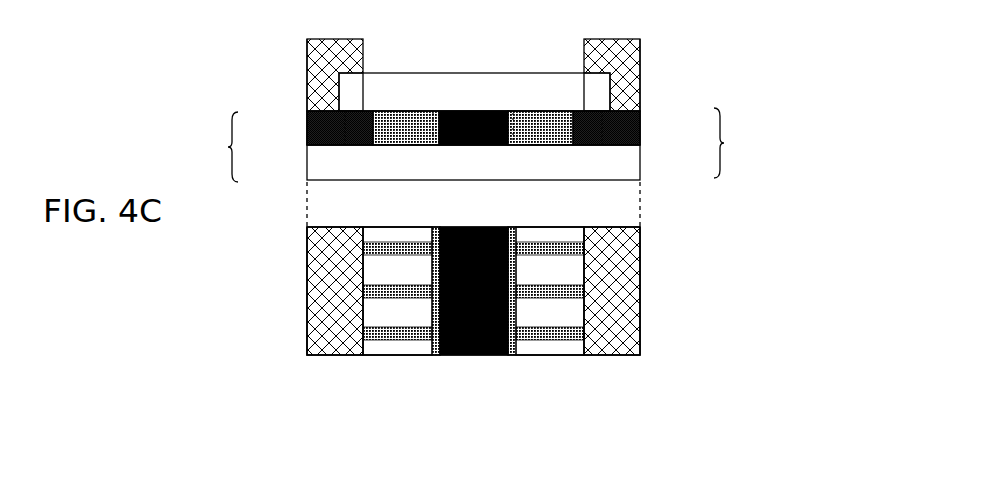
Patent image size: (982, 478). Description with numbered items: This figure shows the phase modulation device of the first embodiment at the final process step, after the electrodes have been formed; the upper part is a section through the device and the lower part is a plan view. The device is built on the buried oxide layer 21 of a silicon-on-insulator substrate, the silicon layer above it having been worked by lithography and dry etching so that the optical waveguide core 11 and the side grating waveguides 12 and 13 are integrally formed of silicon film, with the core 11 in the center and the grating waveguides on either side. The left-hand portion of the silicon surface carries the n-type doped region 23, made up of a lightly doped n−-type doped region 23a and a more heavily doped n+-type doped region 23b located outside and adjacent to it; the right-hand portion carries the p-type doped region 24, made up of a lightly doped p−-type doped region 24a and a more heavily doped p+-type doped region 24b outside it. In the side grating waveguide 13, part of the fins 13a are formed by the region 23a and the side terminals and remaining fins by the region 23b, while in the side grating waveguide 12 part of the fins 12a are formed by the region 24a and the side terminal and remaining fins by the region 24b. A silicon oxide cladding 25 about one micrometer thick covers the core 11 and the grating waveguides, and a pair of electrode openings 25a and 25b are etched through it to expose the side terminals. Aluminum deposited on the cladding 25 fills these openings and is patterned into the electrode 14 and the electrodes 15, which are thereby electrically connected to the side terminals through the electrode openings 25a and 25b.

The optical waveguide core 11 is at (470, 127).
The side grating waveguide 12 is at (563, 362).
The fins 12a is at (550, 255).
The side grating waveguide 13 is at (388, 362).
The fins 13a is at (400, 256).
The electrode 14 is at (612, 58).
The electrodes 15 is at (320, 62).
The buried oxide layer 21 is at (627, 170).
The n-type doped region 23 is at (213, 147).
The n−-type doped region 23a is at (395, 138).
The n+-type doped region 23b is at (328, 127).
The p-type doped region 24 is at (736, 143).
The p−-type doped region 24a is at (550, 147).
The p+-type doped region 24b is at (620, 125).
The cladding 25 is at (547, 92).
The electrode opening 25a is at (336, 97).
The electrode opening 25b is at (613, 98).